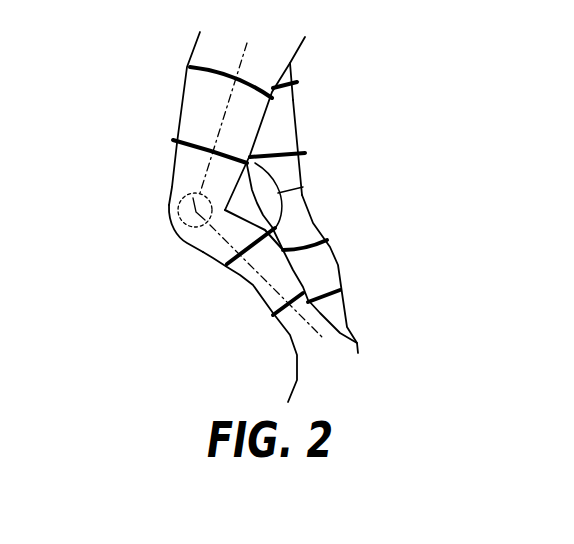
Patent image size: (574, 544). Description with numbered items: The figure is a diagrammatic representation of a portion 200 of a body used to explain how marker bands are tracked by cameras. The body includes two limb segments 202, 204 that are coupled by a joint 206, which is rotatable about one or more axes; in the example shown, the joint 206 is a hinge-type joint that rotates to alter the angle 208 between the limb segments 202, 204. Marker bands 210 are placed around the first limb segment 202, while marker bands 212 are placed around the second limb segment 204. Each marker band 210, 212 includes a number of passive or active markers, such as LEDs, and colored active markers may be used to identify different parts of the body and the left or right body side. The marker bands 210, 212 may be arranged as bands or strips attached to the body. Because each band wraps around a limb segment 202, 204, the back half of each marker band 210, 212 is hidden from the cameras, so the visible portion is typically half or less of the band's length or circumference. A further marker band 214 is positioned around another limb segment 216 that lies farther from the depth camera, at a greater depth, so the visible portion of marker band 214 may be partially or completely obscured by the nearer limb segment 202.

The portion of a body 200 is at (133, 364).
The limb segment 202 is at (182, 108).
The limb segment 204 is at (258, 294).
The joint 206 is at (177, 217).
The angle 208 is at (302, 190).
The marker bands 210 is at (187, 64).
The marker bands 212 is at (231, 270).
The marker band 214 is at (294, 84).
The limb segment 216 is at (297, 125).